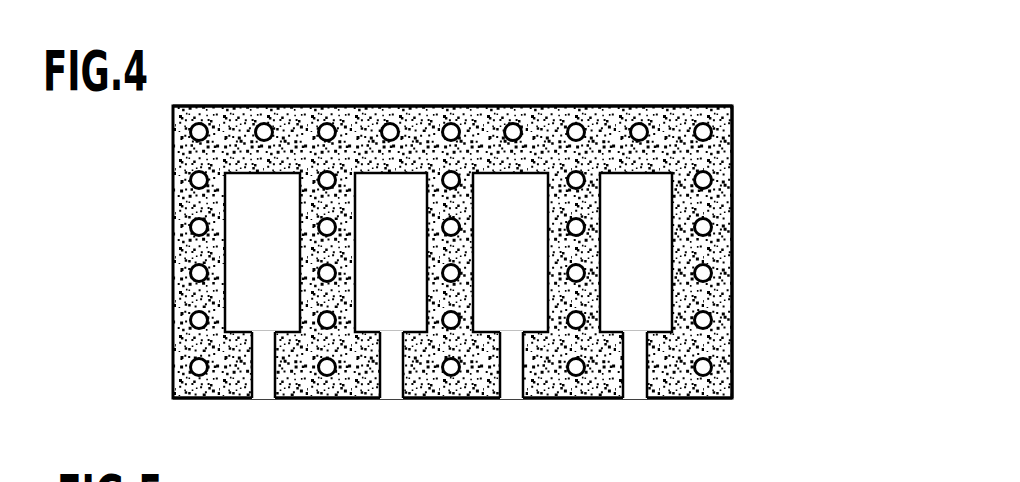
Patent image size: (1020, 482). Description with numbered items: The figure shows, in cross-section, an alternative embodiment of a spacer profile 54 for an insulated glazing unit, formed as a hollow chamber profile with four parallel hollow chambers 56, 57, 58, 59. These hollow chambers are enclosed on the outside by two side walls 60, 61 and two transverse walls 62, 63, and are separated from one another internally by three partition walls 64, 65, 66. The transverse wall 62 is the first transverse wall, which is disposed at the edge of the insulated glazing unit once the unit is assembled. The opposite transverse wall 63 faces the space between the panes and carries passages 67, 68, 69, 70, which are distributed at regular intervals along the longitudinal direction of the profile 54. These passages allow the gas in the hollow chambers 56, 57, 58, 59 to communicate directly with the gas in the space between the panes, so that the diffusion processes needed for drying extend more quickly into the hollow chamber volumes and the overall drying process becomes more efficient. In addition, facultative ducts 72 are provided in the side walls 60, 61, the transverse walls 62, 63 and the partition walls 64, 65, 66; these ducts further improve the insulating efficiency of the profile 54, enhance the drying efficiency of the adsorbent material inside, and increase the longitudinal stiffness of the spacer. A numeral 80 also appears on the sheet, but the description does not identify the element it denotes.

In FIG. 4, the spacer profile 54 is at (784, 224).
In FIG. 4, the hollow chamber 56 is at (245, 291).
In FIG. 4, the hollow chamber 57 is at (367, 291).
In FIG. 4, the hollow chamber 58 is at (485, 291).
In FIG. 4, the hollow chamber 59 is at (619, 291).
In FIG. 4, the side wall 60 is at (148, 189).
In FIG. 4, the side wall 61 is at (770, 297).
In FIG. 4, the first transverse wall 62 is at (356, 68).
In FIG. 4, the transverse wall 63 is at (318, 434).
In FIG. 4, the partition wall 64 is at (266, 211).
In FIG. 4, the partition wall 65 is at (392, 207).
In FIG. 4, the partition wall 66 is at (512, 207).
In FIG. 4, the passage 67 is at (275, 383).
In FIG. 4, the passage 68 is at (401, 376).
In FIG. 4, the passage 69 is at (522, 372).
In FIG. 4, the passage 70 is at (647, 372).
In FIG. 4, the facultative ducts 72 is at (631, 140).
In FIG. 5, the assembly 80 is at (796, 481).